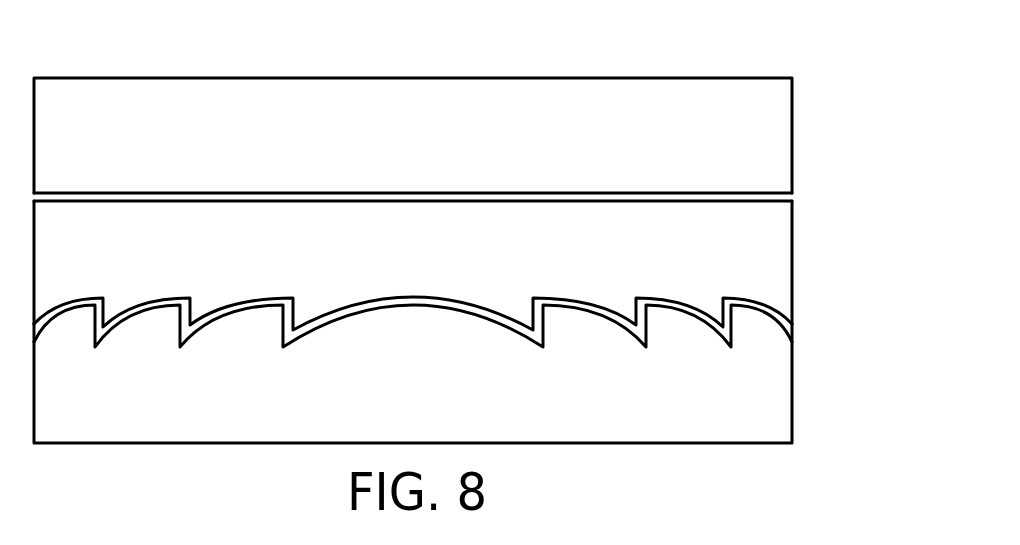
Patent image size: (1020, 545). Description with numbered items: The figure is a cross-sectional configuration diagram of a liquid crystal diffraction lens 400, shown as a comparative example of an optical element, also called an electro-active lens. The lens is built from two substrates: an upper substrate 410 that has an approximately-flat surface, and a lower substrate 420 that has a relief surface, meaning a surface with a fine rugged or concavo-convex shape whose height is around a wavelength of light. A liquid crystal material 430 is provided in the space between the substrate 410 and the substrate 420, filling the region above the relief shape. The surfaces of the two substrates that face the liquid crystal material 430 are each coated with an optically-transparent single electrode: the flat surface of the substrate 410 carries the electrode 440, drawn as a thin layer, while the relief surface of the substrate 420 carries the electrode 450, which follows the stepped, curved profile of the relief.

The liquid crystal diffraction lens 400 is at (466, 223).
The substrate 410 is at (750, 142).
The substrate 420 is at (752, 385).
The liquid crystal material 430 is at (609, 245).
The optically-transparent single electrode 440 is at (793, 197).
The optically-transparent single electrode 450 is at (788, 335).